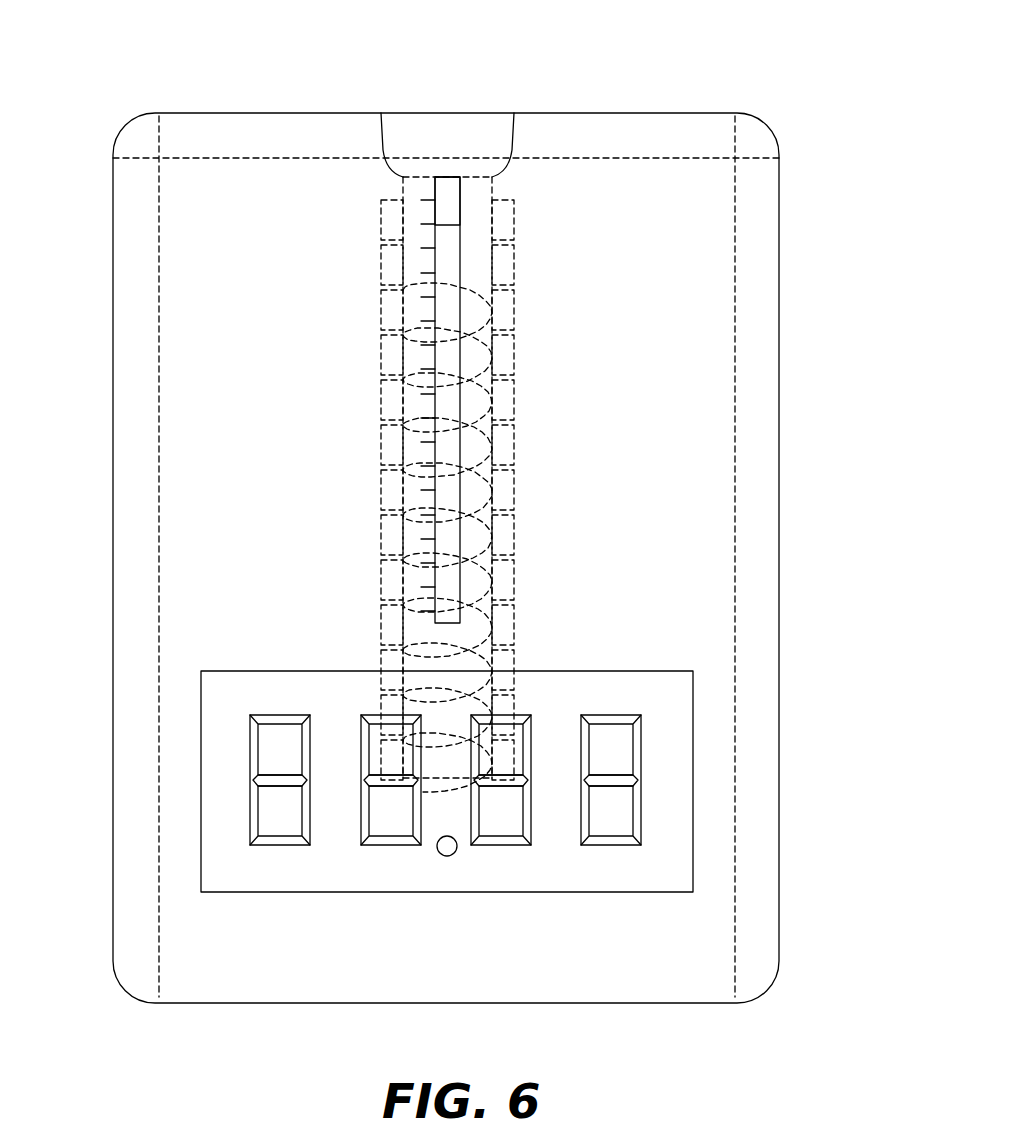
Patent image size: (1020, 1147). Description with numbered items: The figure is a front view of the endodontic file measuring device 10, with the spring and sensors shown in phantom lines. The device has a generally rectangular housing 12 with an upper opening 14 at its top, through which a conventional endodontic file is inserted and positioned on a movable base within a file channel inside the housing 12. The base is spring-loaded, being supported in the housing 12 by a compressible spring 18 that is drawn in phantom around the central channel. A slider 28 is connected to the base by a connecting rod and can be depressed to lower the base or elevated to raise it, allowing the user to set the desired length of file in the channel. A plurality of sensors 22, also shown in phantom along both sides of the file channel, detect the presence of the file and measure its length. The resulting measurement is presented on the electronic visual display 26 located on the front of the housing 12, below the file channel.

The endodontic file measuring device 10 is at (846, 84).
The housing 12 is at (780, 481).
The upper opening 14 is at (440, 82).
The compressible spring 18 is at (420, 520).
The sensors 22 is at (400, 301).
The electronic visual display 26 is at (250, 795).
The slider 28 is at (450, 190).